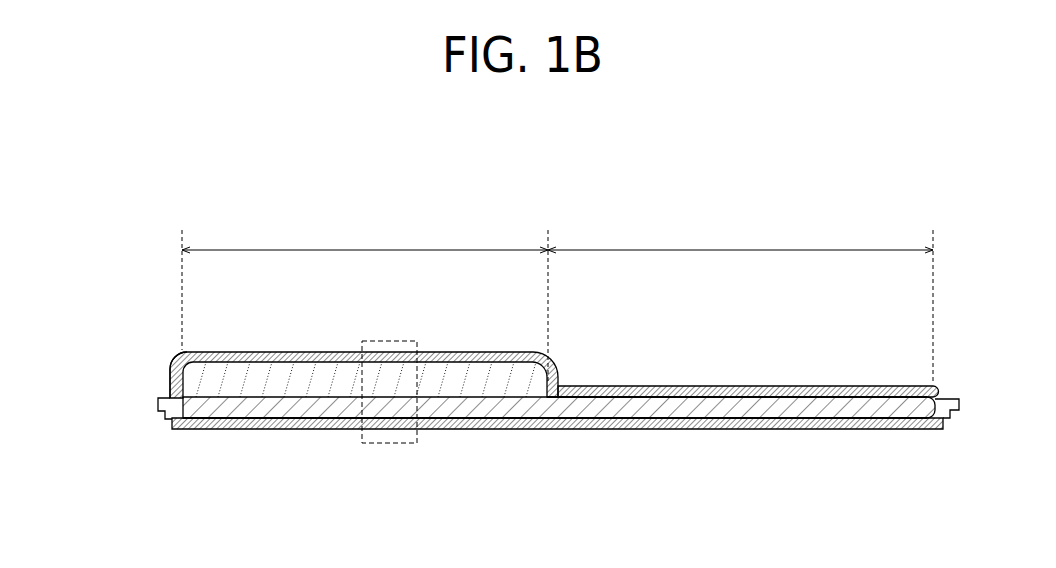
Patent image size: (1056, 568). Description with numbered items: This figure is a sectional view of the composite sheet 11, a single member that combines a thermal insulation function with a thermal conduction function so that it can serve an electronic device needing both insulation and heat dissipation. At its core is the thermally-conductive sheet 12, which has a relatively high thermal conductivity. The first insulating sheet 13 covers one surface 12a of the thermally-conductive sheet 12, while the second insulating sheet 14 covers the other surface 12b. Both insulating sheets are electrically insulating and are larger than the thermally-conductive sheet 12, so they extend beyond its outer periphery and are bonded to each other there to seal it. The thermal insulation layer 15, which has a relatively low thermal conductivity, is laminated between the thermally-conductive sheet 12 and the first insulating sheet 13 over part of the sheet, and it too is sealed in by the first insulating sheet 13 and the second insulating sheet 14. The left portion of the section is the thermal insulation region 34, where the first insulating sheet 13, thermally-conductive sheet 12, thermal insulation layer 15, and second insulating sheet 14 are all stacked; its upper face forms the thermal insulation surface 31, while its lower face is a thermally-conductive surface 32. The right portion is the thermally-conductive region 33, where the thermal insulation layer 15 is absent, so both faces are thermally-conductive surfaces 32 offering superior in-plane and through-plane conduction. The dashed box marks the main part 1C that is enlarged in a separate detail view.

The composite sheet 11 is at (868, 217).
The thermally-conductive sheet 12 is at (943, 391).
The one surface of thermally-conductive sheet 12a is at (608, 385).
The another surface of thermally-conductive sheet 12b is at (628, 428).
The first insulating sheet 13 is at (893, 387).
The second insulating sheet 14 is at (168, 432).
The thermal insulation layer 15 is at (198, 378).
The thermal insulation surface 31 is at (293, 348).
The thermally-conductive surface 32 is at (728, 385).
The thermally-conductive region 33 is at (740, 301).
The thermal insulation region 34 is at (365, 284).
The main part 1C is at (378, 443).